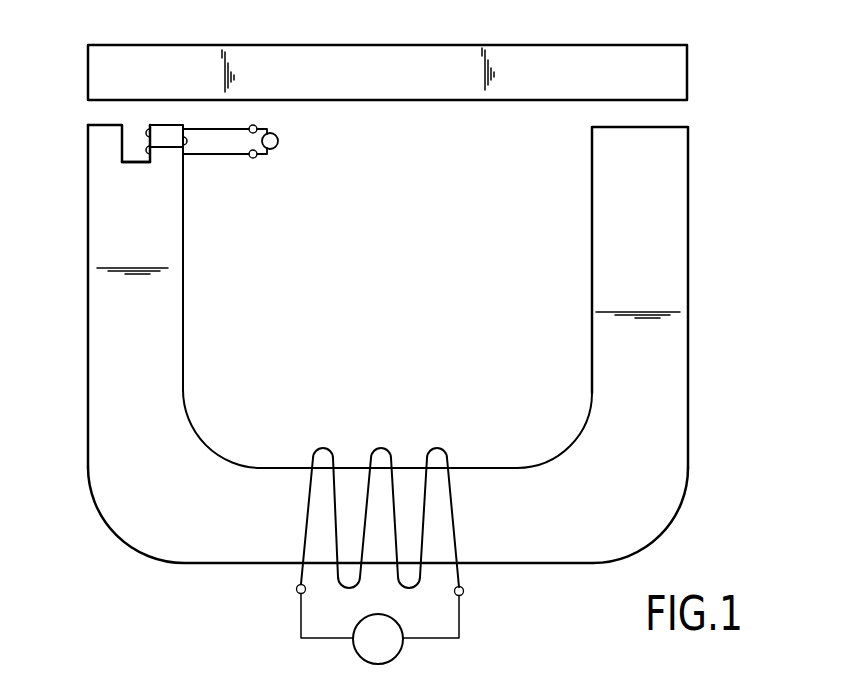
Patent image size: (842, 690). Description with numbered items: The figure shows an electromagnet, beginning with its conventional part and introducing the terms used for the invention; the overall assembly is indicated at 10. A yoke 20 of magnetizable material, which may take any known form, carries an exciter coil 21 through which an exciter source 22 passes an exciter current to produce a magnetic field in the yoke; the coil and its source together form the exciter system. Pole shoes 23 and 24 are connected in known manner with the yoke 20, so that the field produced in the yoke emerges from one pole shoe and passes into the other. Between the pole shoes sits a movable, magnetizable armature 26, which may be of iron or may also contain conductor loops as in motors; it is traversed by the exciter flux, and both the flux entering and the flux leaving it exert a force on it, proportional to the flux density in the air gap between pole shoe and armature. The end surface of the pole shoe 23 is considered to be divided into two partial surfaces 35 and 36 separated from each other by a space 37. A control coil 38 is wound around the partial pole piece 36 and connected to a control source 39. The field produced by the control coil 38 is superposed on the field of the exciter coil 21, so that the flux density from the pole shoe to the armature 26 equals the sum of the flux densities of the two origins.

The thermostat assembly 10 is at (167, 148).
The yoke 20 is at (243, 523).
The exciter coil 21 is at (387, 450).
The exciter source 22 is at (387, 650).
The pole shoe 23 is at (108, 237).
The pole shoe 24 is at (680, 187).
The armature 26 is at (410, 57).
The partial surface 35 is at (110, 128).
The partial surface 36 is at (163, 136).
The space 37 is at (128, 162).
The control coil 38 is at (233, 158).
The control source 39 is at (278, 141).